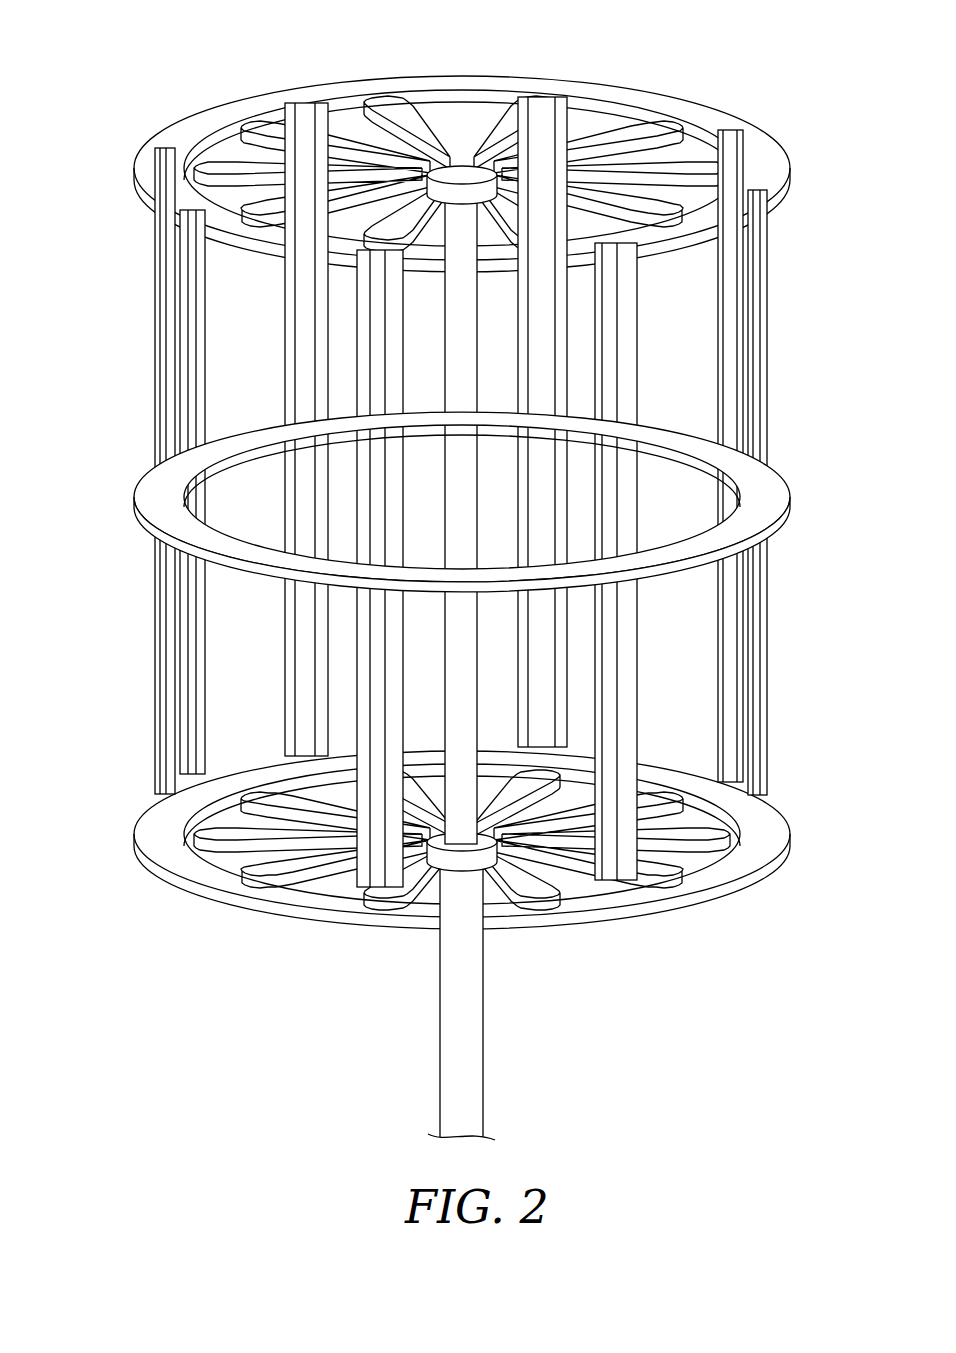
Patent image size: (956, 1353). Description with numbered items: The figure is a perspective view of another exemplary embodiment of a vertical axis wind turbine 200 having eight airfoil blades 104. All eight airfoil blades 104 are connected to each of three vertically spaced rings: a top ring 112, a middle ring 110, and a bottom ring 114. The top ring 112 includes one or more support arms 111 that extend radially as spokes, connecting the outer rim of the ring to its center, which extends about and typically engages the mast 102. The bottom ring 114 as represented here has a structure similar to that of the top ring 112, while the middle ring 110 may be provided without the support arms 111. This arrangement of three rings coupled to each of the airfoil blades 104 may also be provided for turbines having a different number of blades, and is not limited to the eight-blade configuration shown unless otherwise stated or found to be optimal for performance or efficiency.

The vertical axis wind turbine 200 is at (118, 88).
The mast 102 is at (440, 1033).
The airfoil blades 104 is at (758, 254).
The middle ring 110 is at (143, 507).
The support arms 111 is at (478, 136).
The top ring 112 is at (142, 172).
The bottom ring 114 is at (150, 837).